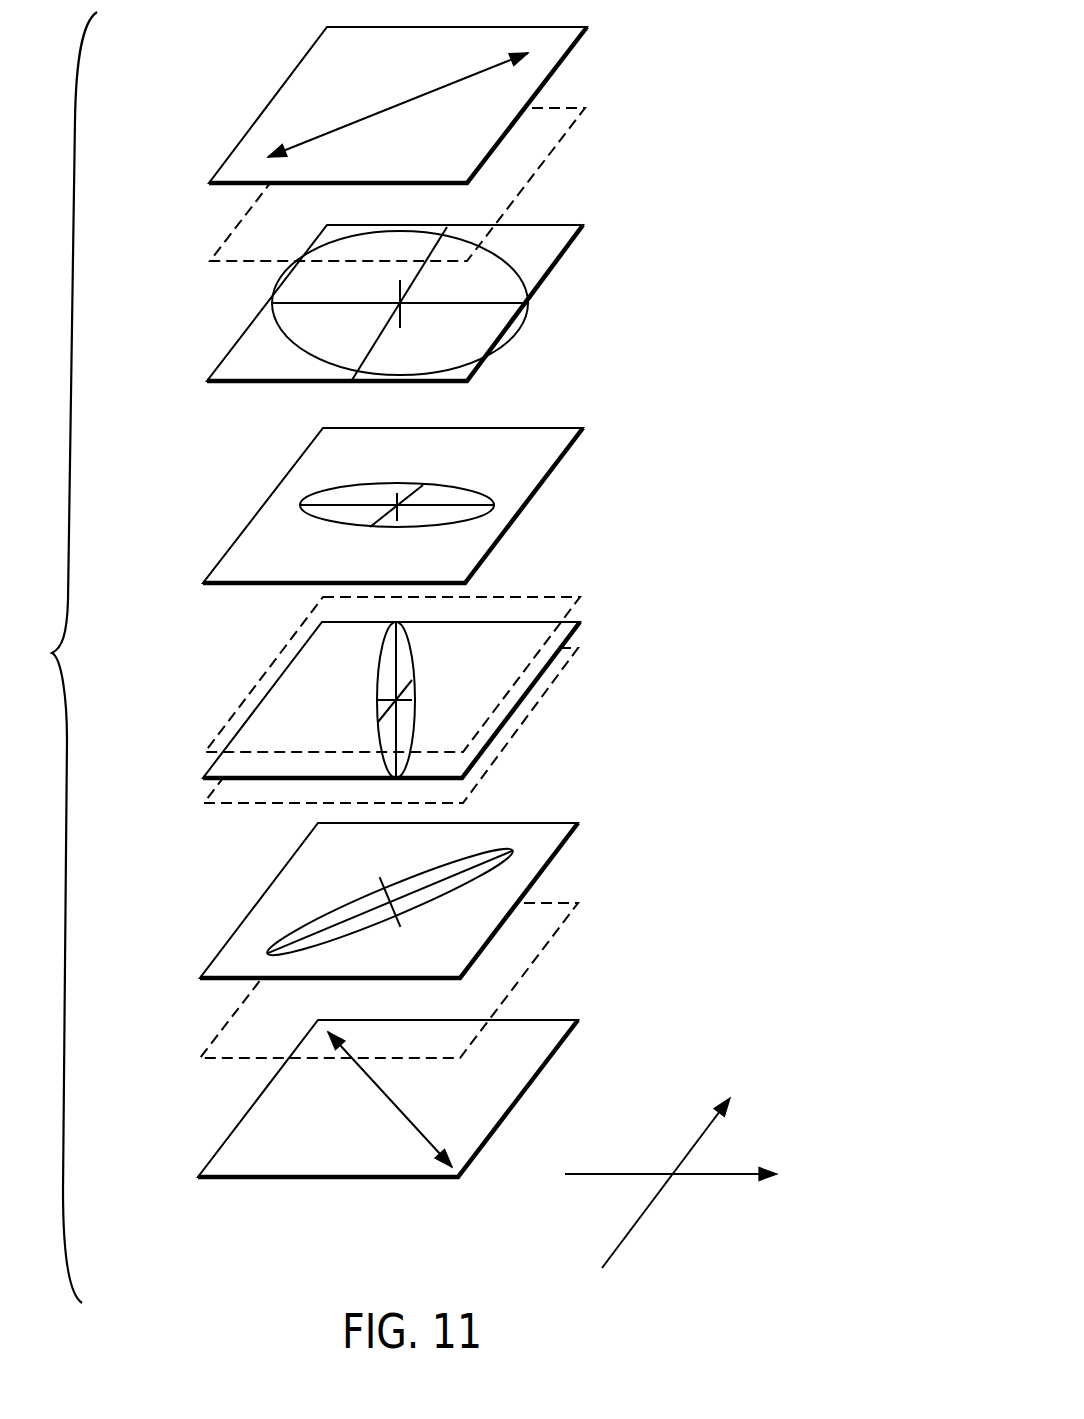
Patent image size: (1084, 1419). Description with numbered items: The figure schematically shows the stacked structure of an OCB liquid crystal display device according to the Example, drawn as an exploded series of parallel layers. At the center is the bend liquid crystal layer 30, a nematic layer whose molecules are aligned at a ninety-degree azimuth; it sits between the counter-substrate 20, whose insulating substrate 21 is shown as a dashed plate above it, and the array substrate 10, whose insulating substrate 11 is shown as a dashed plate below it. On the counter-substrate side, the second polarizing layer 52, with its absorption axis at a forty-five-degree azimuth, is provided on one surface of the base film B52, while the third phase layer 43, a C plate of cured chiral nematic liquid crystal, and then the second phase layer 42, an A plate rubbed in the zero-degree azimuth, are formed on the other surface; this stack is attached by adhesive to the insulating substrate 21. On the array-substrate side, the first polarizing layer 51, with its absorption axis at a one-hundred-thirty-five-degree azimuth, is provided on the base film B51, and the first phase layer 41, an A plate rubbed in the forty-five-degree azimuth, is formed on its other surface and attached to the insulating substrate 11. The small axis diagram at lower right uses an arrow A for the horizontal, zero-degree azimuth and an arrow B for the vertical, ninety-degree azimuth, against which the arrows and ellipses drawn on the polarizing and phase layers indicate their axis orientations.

The second polarizing layer 52 is at (275, 97).
The first polarizing layer 51 is at (205, 1162).
The third phase layer 43 is at (232, 340).
The second phase layer 42 is at (238, 540).
The first phase layer 41 is at (213, 957).
The bend liquid crystal layer 30 is at (208, 765).
The counter-substrate 20 is at (445, 673).
The insulating substrate 21 is at (577, 600).
The array substrate 10 is at (439, 725).
The insulating substrate 11 is at (567, 670).
The base film B52 is at (563, 135).
The base film B51 is at (542, 948).
The arrow A is at (582, 1173).
The arrow B is at (640, 1218).